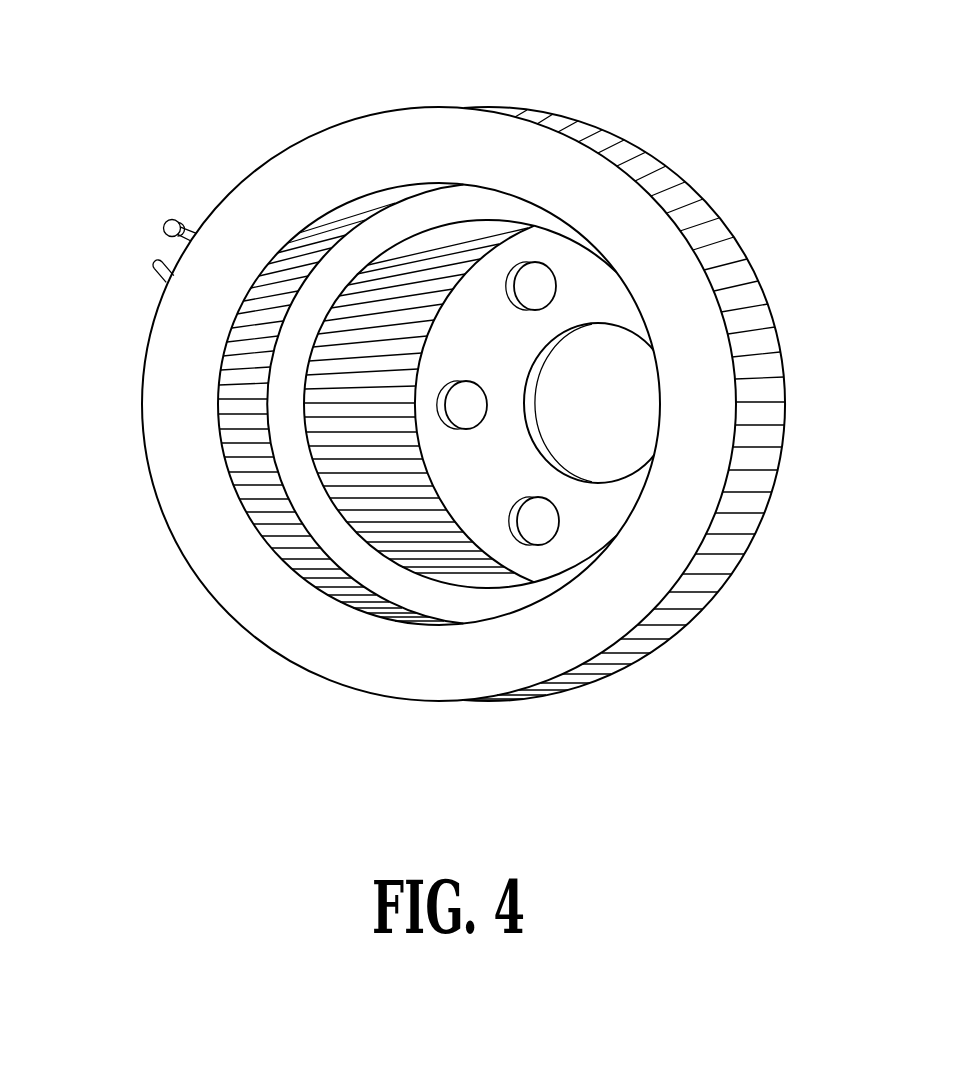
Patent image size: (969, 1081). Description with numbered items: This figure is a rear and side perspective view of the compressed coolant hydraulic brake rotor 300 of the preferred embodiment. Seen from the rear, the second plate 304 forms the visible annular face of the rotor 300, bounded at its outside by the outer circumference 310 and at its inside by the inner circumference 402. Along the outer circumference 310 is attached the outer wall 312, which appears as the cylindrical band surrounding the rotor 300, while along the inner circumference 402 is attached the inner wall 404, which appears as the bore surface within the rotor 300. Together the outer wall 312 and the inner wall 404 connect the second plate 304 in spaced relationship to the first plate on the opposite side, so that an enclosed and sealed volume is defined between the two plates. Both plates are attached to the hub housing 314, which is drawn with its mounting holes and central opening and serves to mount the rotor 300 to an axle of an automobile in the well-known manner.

The rotor 300 is at (640, 106).
The second plate 304 is at (433, 141).
The outer circumference 310 is at (206, 610).
The outer wall 312 is at (763, 411).
The hub housing 314 is at (590, 282).
The inner circumference 402 is at (316, 615).
The inner wall 404 is at (236, 434).